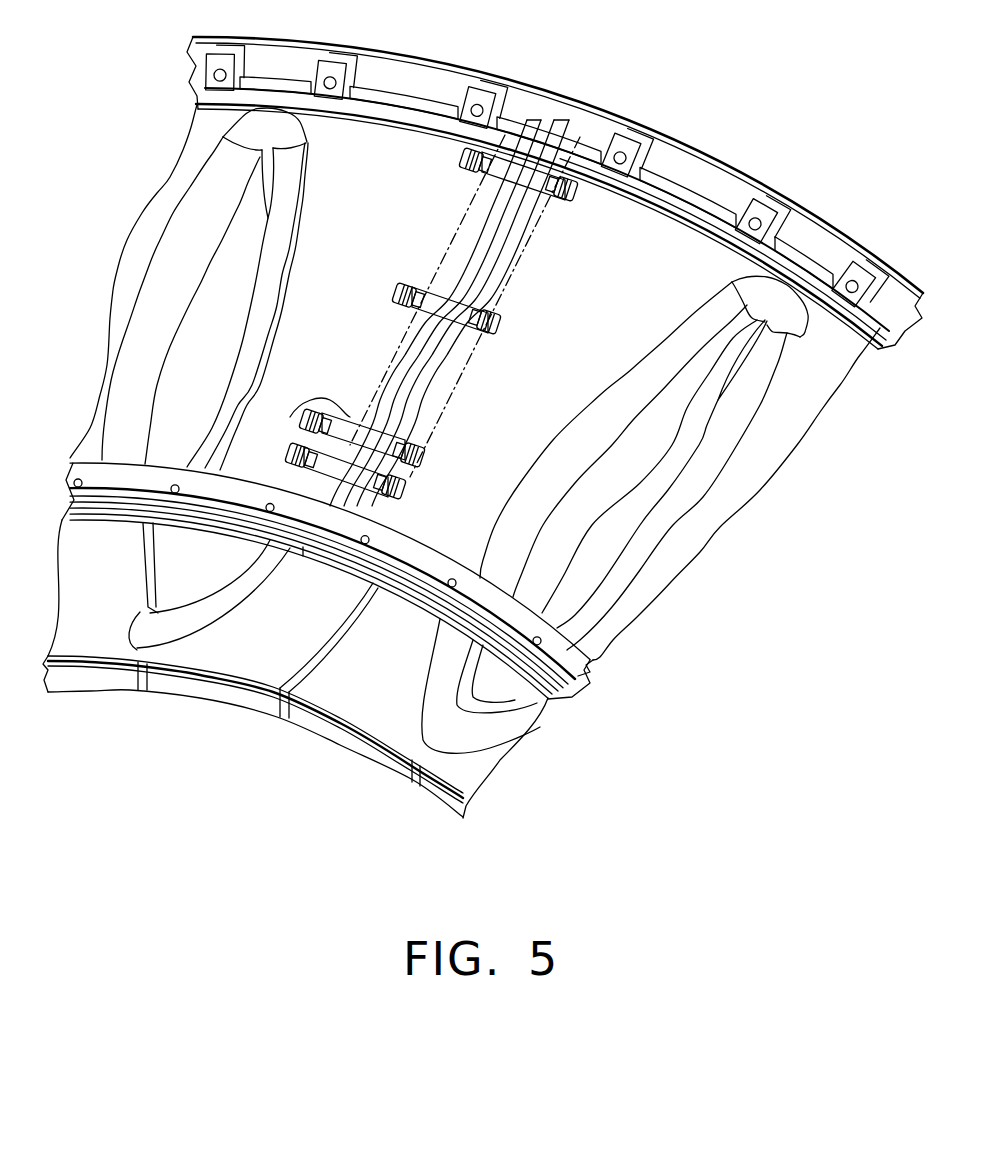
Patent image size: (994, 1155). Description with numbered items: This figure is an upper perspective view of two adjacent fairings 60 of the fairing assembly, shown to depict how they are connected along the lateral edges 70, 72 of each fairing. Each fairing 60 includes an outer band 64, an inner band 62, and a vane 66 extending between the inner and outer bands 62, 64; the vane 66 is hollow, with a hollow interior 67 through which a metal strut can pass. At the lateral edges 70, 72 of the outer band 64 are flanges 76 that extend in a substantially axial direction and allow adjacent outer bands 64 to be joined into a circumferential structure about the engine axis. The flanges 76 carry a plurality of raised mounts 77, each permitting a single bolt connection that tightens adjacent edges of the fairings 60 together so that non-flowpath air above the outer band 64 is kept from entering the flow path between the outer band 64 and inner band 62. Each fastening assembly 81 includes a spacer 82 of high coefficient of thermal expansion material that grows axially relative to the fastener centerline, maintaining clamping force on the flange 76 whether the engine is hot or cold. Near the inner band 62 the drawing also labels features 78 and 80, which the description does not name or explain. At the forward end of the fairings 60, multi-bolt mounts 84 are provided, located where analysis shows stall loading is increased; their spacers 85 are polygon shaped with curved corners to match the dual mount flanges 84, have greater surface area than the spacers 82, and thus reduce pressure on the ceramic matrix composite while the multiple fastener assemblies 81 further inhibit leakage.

The fairing 60 is at (555, 174).
The inner band 62 is at (316, 640).
The outer band 64 is at (286, 305).
The vane 66 is at (311, 657).
The hollow interior 67 is at (471, 390).
The lateral edge 70 is at (435, 313).
The lateral edge 72 is at (463, 313).
The flange 76 is at (480, 242).
The raised mount 77 is at (528, 122).
The segment seam 78 is at (366, 637).
The inner band rib 80 is at (232, 594).
The fastening assembly 81 is at (600, 212).
The spacer 82 is at (472, 165).
The multi-bolt mount 84 is at (368, 420).
The spacer 85 is at (316, 425).